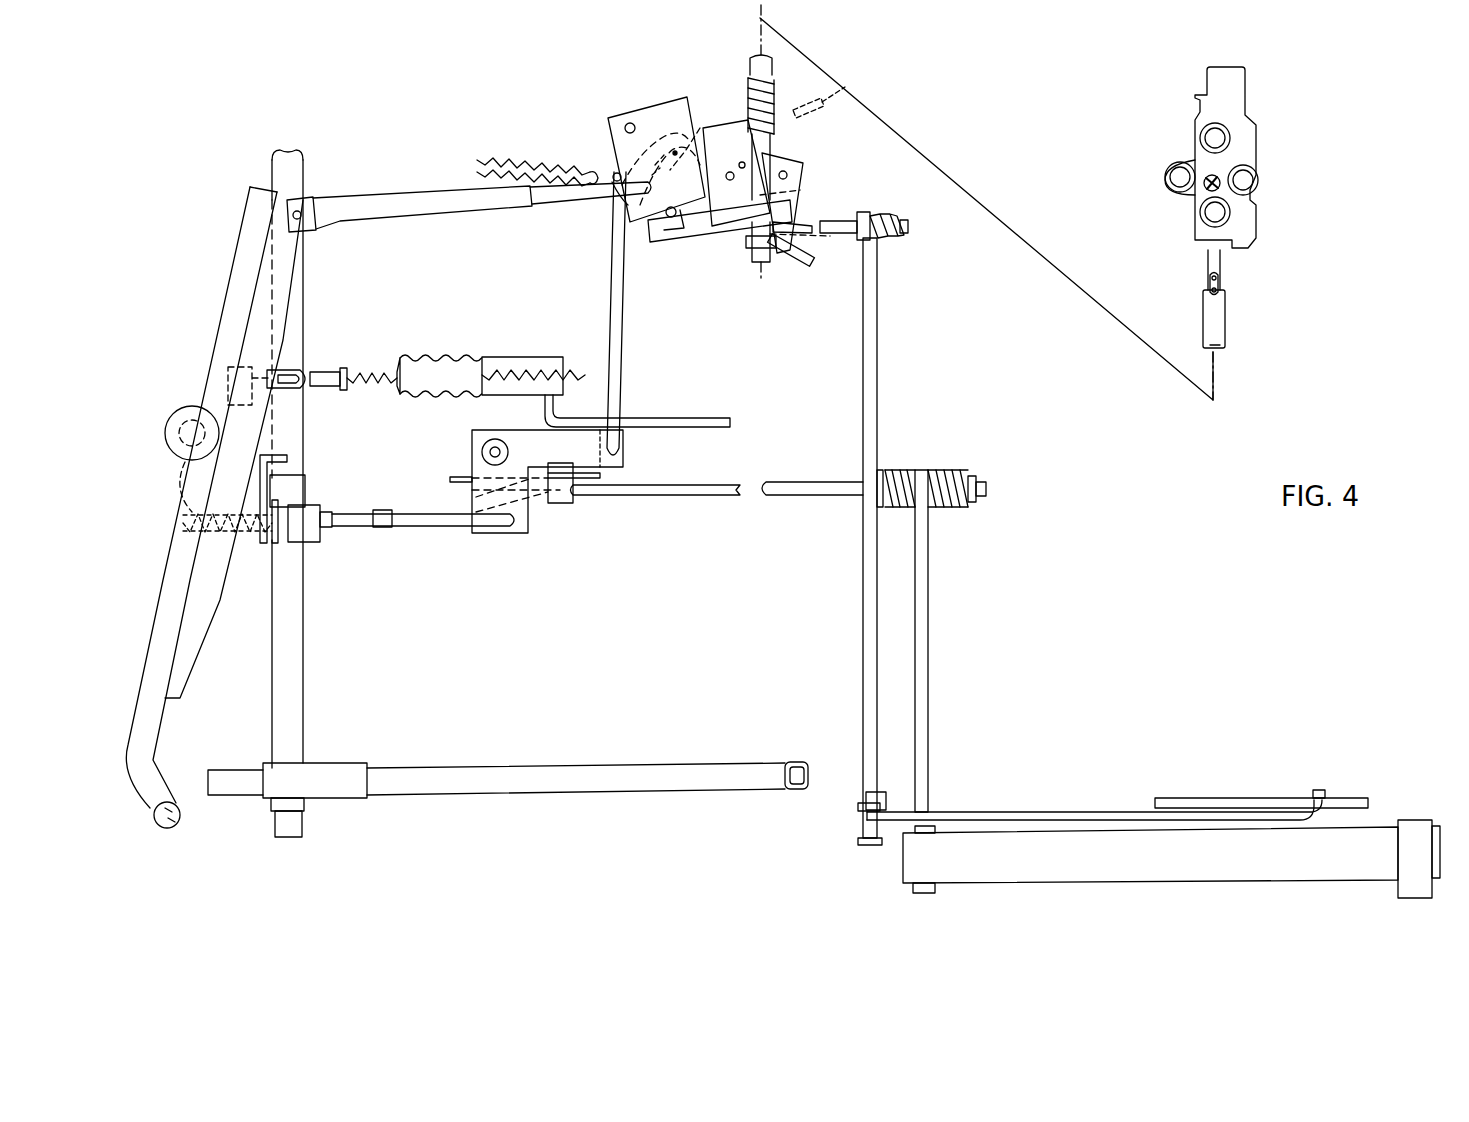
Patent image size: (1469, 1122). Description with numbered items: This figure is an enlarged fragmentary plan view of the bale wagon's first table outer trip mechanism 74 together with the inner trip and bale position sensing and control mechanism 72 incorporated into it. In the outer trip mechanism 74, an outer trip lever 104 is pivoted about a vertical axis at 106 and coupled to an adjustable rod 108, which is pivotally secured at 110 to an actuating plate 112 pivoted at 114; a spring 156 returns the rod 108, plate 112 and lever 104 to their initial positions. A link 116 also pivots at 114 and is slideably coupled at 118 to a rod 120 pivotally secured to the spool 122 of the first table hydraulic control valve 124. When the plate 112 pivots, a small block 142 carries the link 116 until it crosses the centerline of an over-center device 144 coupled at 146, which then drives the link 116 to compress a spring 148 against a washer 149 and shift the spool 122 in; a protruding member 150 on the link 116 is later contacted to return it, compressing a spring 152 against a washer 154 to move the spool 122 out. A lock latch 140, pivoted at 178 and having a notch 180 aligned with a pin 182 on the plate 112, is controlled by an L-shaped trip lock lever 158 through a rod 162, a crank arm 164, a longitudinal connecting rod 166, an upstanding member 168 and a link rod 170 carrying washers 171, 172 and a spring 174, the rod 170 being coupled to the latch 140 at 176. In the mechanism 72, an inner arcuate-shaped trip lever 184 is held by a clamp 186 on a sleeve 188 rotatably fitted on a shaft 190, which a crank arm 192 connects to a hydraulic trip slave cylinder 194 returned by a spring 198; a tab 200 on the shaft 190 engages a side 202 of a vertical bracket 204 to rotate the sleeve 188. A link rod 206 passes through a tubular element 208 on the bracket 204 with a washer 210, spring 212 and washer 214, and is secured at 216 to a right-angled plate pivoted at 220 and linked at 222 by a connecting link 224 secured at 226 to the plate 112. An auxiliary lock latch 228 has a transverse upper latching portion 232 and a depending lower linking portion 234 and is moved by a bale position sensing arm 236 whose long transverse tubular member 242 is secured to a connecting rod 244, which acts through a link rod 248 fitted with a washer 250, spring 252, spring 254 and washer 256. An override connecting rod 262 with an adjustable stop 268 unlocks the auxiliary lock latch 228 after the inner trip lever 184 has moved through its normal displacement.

The mechanism 72 is at (784, 800).
The first table outer trip mechanism 74 is at (478, 152).
The outer trip lever 104 is at (165, 560).
The pivot point 106 is at (192, 406).
The adjustable rod 108 is at (424, 200).
The pivot point 110 is at (614, 183).
The actuating plate 112 is at (668, 240).
The pivot point 114 is at (620, 205).
The link 116 is at (706, 130).
The sliding coupling 118 is at (790, 190).
The rod 120 is at (772, 142).
The spool 122 is at (1222, 262).
The first table hydraulic control valve 124 is at (1256, 138).
The lock latch 140 is at (745, 248).
The small block 142 is at (748, 205).
The over-center device 144 is at (598, 154).
The pivot coupling 146 is at (732, 172).
The spring 148 is at (774, 100).
The washer 149 is at (748, 66).
The protruding member 150 is at (845, 87).
The spring 152 is at (808, 236).
The washer 154 is at (766, 250).
The spring 156 is at (552, 170).
The L-shaped trip lock lever 158 is at (1255, 800).
The rod 162 is at (1040, 812).
The crank arm 164 is at (880, 800).
The longitudinal connecting rod 166 is at (863, 645).
The upstanding member 168 is at (868, 215).
The link rod 170 is at (840, 222).
The washer 171 is at (863, 260).
The washer 172 is at (900, 214).
The spring 174 is at (885, 236).
The pivot coupling 176 is at (786, 225).
The pivot point 178 is at (790, 175).
The notch 180 is at (685, 230).
The pin 182 is at (669, 218).
The inner arcuate-shaped trip lever 184 is at (708, 772).
The clamp 186 is at (333, 765).
The sleeve 188 is at (303, 648).
The shaft 190 is at (302, 828).
The crank arm 192 is at (300, 372).
The hydraulic trip slave cylinder 194 is at (532, 398).
The spring 198 is at (450, 370).
The tab 200 is at (287, 460).
The side 202 is at (320, 540).
The vertical bracket 204 is at (308, 496).
The link rod 206 is at (445, 527).
The tubular element 208 is at (332, 530).
The washer 210 is at (187, 462).
The spring 212 is at (258, 538).
The washer 214 is at (275, 545).
The pivot point 216 is at (515, 520).
The pivot point 220 is at (485, 452).
The pivot point 222 is at (620, 452).
The connecting link 224 is at (612, 322).
The pivot point 226 is at (635, 120).
The auxiliary lock latch 228 is at (612, 497).
The transverse upper latching portion 232 is at (452, 482).
The depending lower linking portion 234 is at (560, 503).
The bale position sensing arm 236 is at (1440, 822).
The long transverse tubular member 242 is at (1150, 859).
The connecting rod 244 is at (928, 728).
The link rod 248 is at (782, 495).
The washer 250 is at (978, 496).
The spring 252 is at (955, 478).
The spring 254 is at (905, 485).
The washer 256 is at (882, 472).
The connecting rod 262 is at (540, 512).
The adjustable stop 268 is at (388, 530).